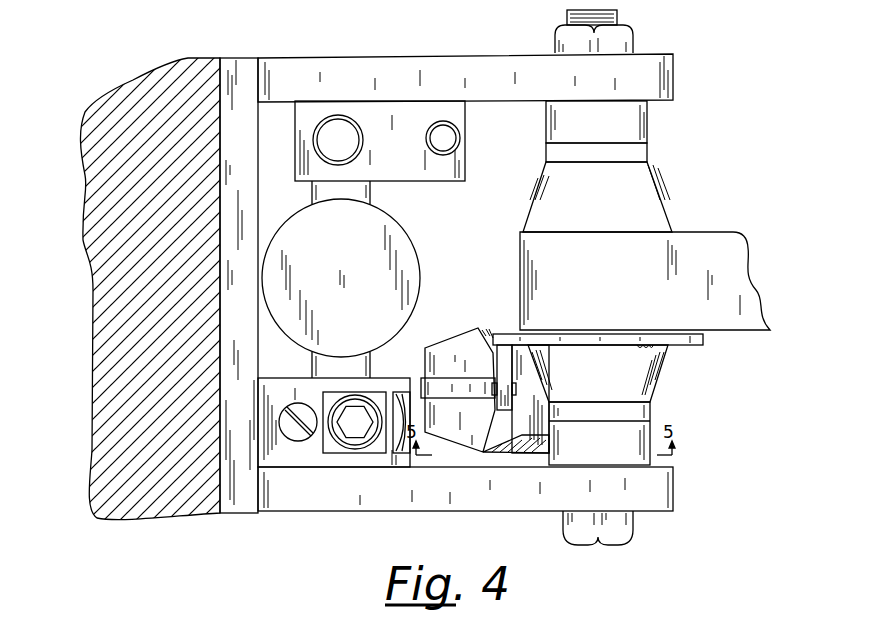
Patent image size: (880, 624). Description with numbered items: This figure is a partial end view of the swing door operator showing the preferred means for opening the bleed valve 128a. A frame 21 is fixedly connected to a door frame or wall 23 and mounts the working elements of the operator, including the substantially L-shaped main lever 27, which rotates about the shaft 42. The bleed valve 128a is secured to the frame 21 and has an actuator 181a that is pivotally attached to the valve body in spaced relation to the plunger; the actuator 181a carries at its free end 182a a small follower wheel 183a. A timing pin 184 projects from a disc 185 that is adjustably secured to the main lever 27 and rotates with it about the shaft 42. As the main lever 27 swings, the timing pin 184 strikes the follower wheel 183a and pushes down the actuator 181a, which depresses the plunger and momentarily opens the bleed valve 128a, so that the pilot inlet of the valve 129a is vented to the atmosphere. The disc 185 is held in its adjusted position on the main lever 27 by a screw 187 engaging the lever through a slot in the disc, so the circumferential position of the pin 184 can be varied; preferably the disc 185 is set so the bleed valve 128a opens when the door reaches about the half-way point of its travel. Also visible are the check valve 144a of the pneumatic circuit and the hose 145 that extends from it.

The frame 21 is at (386, 58).
The door frame or wall 23 is at (83, 190).
The shaft 42 is at (650, 133).
The main lever 27 is at (698, 232).
The valve 129a is at (412, 246).
The bleed valve 128a is at (472, 332).
The timing pin 184 is at (493, 353).
The actuator 181a is at (462, 378).
The screw 187 is at (645, 347).
The disc 185 is at (623, 347).
The check valve 144a is at (360, 453).
The hose 145 is at (402, 455).
The free end of actuator 182a is at (483, 452).
The follower wheel 183a is at (508, 410).